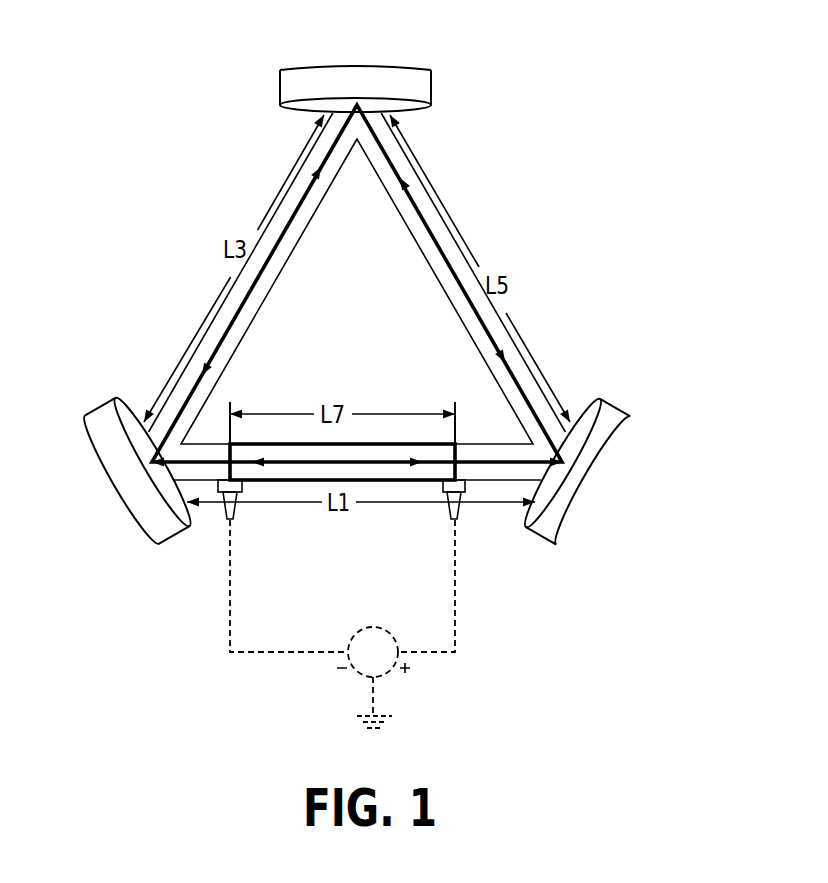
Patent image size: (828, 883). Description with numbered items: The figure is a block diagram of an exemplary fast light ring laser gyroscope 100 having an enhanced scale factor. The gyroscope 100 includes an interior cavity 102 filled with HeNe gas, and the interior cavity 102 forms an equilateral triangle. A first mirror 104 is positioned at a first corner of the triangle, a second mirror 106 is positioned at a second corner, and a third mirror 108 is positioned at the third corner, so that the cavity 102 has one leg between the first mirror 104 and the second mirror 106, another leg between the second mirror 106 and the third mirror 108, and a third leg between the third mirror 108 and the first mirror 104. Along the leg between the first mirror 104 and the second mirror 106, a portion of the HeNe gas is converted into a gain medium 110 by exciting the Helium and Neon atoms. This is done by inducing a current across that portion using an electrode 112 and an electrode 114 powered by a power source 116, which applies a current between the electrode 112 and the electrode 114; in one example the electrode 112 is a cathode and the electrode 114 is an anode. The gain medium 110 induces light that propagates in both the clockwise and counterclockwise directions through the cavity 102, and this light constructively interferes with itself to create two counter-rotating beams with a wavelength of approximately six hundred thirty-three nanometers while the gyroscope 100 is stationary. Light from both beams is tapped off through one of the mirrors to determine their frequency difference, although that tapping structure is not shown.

The fast light ring laser gyroscope 100 is at (606, 152).
The interior cavity 102 is at (432, 220).
The first mirror 104 is at (597, 480).
The second mirror 106 is at (127, 462).
The third mirror 108 is at (317, 85).
The gain medium 110 is at (380, 470).
The electrode 112 is at (463, 487).
The electrode 114 is at (242, 487).
The power source 116 is at (383, 675).